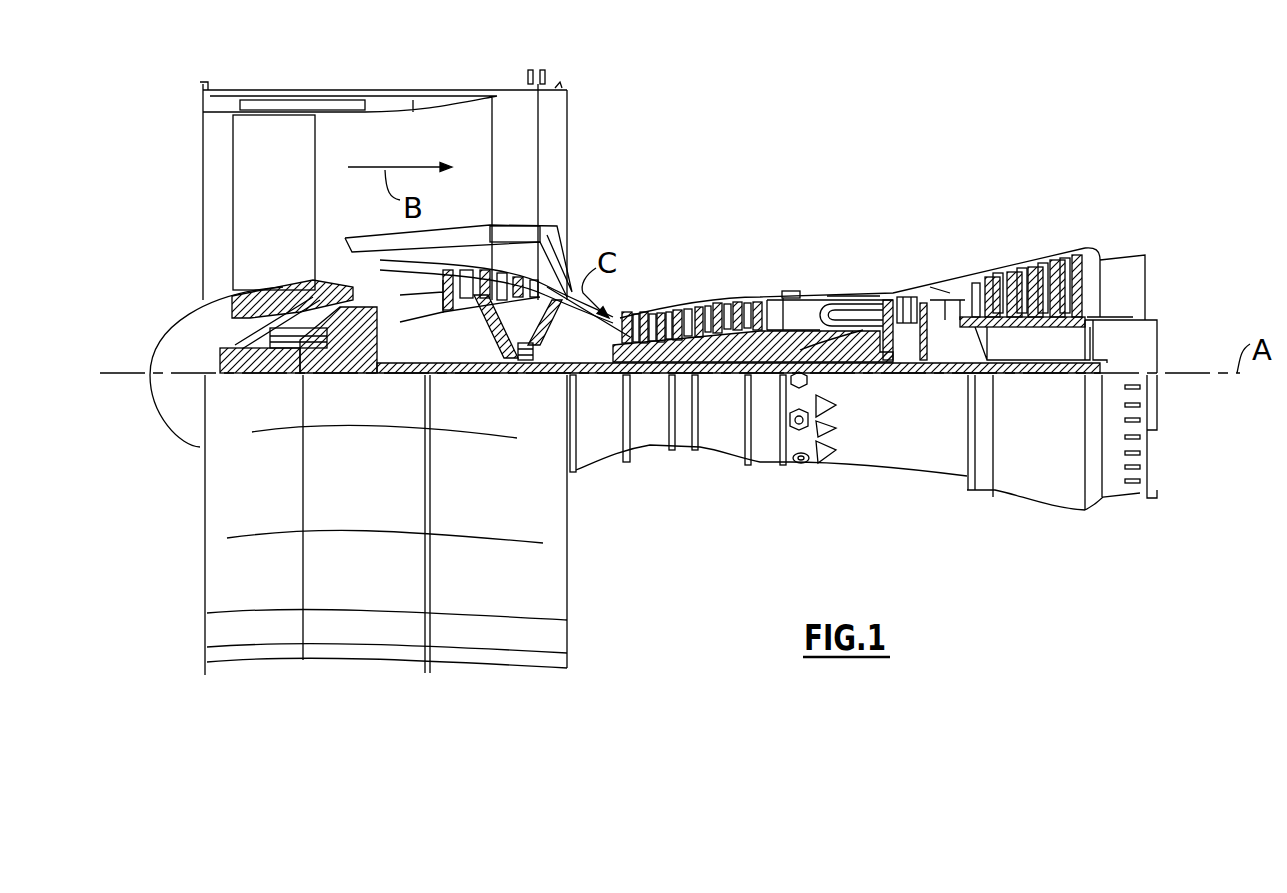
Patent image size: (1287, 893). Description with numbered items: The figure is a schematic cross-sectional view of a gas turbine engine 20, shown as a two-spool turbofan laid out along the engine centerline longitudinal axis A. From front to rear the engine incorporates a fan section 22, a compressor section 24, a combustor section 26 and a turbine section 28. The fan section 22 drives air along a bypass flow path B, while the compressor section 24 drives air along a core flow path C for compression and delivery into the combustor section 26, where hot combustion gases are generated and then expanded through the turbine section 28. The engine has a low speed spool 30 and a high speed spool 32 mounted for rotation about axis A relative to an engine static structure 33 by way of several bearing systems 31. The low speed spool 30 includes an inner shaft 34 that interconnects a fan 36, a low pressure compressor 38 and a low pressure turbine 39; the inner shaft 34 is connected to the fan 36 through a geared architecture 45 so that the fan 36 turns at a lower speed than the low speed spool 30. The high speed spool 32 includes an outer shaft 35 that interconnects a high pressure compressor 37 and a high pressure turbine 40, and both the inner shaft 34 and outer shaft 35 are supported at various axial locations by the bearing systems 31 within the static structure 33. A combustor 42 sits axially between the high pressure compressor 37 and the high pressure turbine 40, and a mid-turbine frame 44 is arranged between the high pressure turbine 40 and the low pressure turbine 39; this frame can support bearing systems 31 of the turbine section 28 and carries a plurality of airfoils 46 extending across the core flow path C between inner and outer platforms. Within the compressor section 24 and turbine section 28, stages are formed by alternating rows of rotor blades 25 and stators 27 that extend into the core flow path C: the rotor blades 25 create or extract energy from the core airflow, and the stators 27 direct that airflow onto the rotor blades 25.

The gas turbine engine 20 is at (855, 132).
The fan section 22 is at (318, 80).
The compressor section 24 is at (619, 278).
The rotor blades 25 is at (468, 275).
The combustor section 26 is at (838, 258).
The stators 27 is at (500, 275).
The turbine section 28 is at (990, 231).
The low speed spool 30 is at (723, 390).
The bearing systems 31 is at (300, 345).
The high speed spool 32 is at (768, 330).
The engine static structure 33 is at (763, 473).
The inner shaft 34 is at (588, 375).
The outer shaft 35 is at (853, 365).
The fan 36 is at (290, 220).
The high pressure compressor 37 is at (696, 340).
The low pressure compressor 38 is at (557, 230).
The low pressure turbine 39 is at (1018, 262).
The high pressure turbine 40 is at (905, 292).
The combustor 42 is at (840, 313).
The mid-turbine frame 44 is at (953, 272).
The geared architecture 45 is at (387, 347).
The airfoils 46 is at (943, 308).